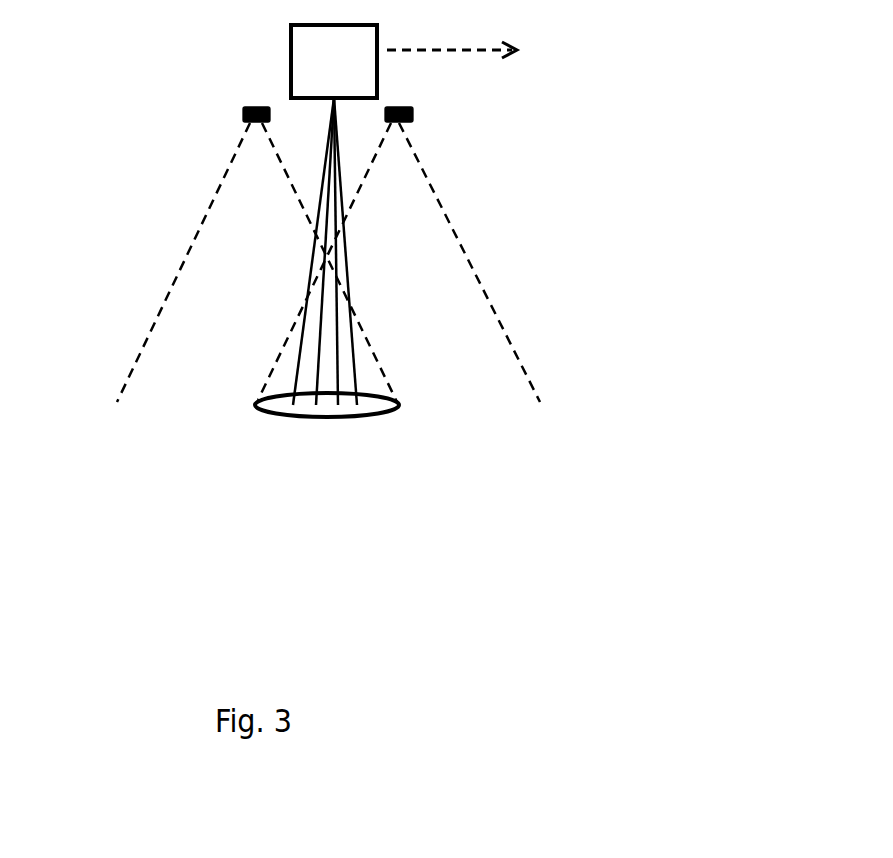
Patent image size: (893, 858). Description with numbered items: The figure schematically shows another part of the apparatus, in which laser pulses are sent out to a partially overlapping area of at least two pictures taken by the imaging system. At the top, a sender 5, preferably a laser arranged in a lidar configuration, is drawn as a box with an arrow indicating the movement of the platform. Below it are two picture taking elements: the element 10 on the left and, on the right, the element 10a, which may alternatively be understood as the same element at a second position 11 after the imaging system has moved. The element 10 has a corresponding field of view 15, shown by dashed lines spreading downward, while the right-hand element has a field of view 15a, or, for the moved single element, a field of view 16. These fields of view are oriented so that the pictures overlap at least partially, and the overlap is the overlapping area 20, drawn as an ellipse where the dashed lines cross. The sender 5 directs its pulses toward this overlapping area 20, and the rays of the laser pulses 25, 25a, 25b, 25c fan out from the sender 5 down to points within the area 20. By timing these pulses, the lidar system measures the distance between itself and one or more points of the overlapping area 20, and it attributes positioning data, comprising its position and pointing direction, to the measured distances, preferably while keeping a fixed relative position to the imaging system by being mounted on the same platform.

The sender 5 is at (334, 61).
The picture taking element 10 is at (248, 128).
The picture taking element 10a is at (535, 133).
The position of picture taking element 11 is at (397, 123).
The field of view 15 is at (168, 292).
The field of view 15a is at (520, 262).
The field of view 16 is at (505, 330).
The overlapping area 20 is at (367, 402).
The ray of laser pulse 25 is at (297, 372).
The ray of laser pulse 25a is at (318, 380).
The ray of laser pulse 25b is at (338, 368).
The ray of laser pulse 25c is at (355, 372).